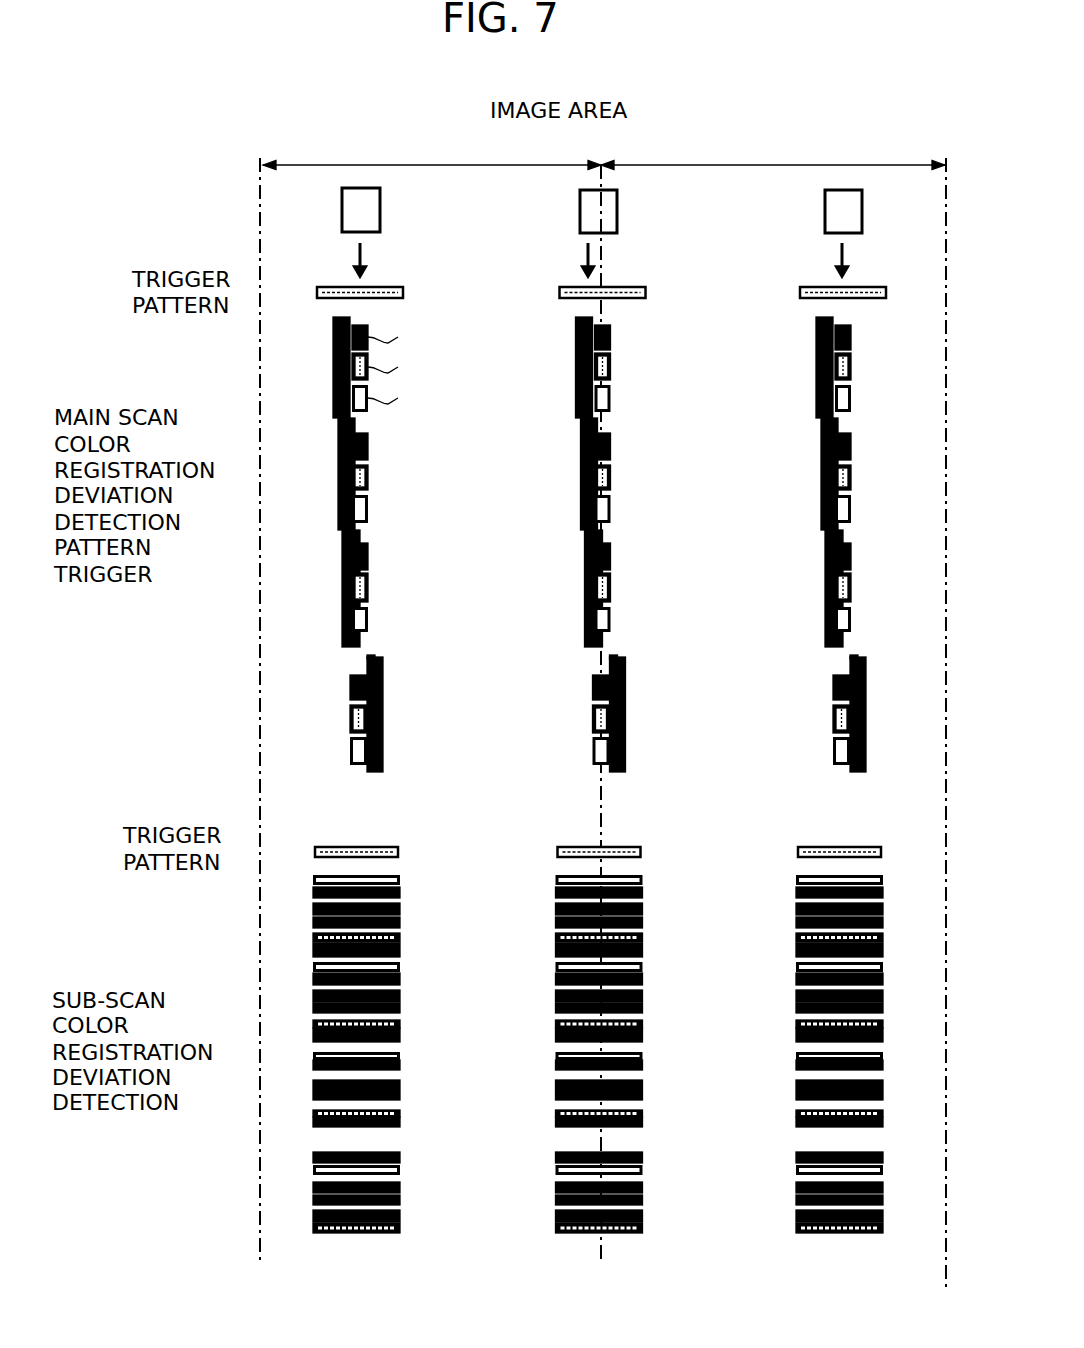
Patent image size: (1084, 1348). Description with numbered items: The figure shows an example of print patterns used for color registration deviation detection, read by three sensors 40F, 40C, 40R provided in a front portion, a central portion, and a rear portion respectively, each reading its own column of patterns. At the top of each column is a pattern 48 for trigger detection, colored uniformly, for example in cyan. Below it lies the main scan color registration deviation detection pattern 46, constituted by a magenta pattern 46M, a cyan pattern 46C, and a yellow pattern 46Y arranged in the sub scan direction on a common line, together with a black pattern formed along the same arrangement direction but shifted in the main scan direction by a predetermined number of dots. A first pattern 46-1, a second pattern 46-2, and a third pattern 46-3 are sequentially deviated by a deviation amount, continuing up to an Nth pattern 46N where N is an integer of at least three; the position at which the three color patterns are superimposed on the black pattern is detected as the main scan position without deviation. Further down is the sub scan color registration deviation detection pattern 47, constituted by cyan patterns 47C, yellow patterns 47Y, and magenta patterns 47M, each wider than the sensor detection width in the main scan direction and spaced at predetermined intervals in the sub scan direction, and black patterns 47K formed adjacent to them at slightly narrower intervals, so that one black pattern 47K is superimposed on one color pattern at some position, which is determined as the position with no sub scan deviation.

The sensor 40F is at (380, 200).
The sensor 40C is at (617, 200).
The sensor 40R is at (830, 188).
The pattern for trigger detection 48 is at (330, 287).
The main scan color registration deviation detection pattern 46 is at (250, 318).
The first pattern 46-1 is at (333, 345).
The second pattern 46-2 is at (338, 462).
The third pattern 46-3 is at (342, 580).
The magenta pattern 46M is at (368, 447).
The cyan pattern 46C is at (368, 477).
The yellow pattern 46Y is at (368, 509).
The Nth pattern 46N is at (383, 718).
The sub scan color registration deviation detection pattern 47 is at (240, 877).
The yellow pattern 47Y is at (400, 876).
The black pattern 47K is at (400, 892).
The magenta pattern 47M is at (313, 923).
The cyan pattern 47C is at (400, 937).